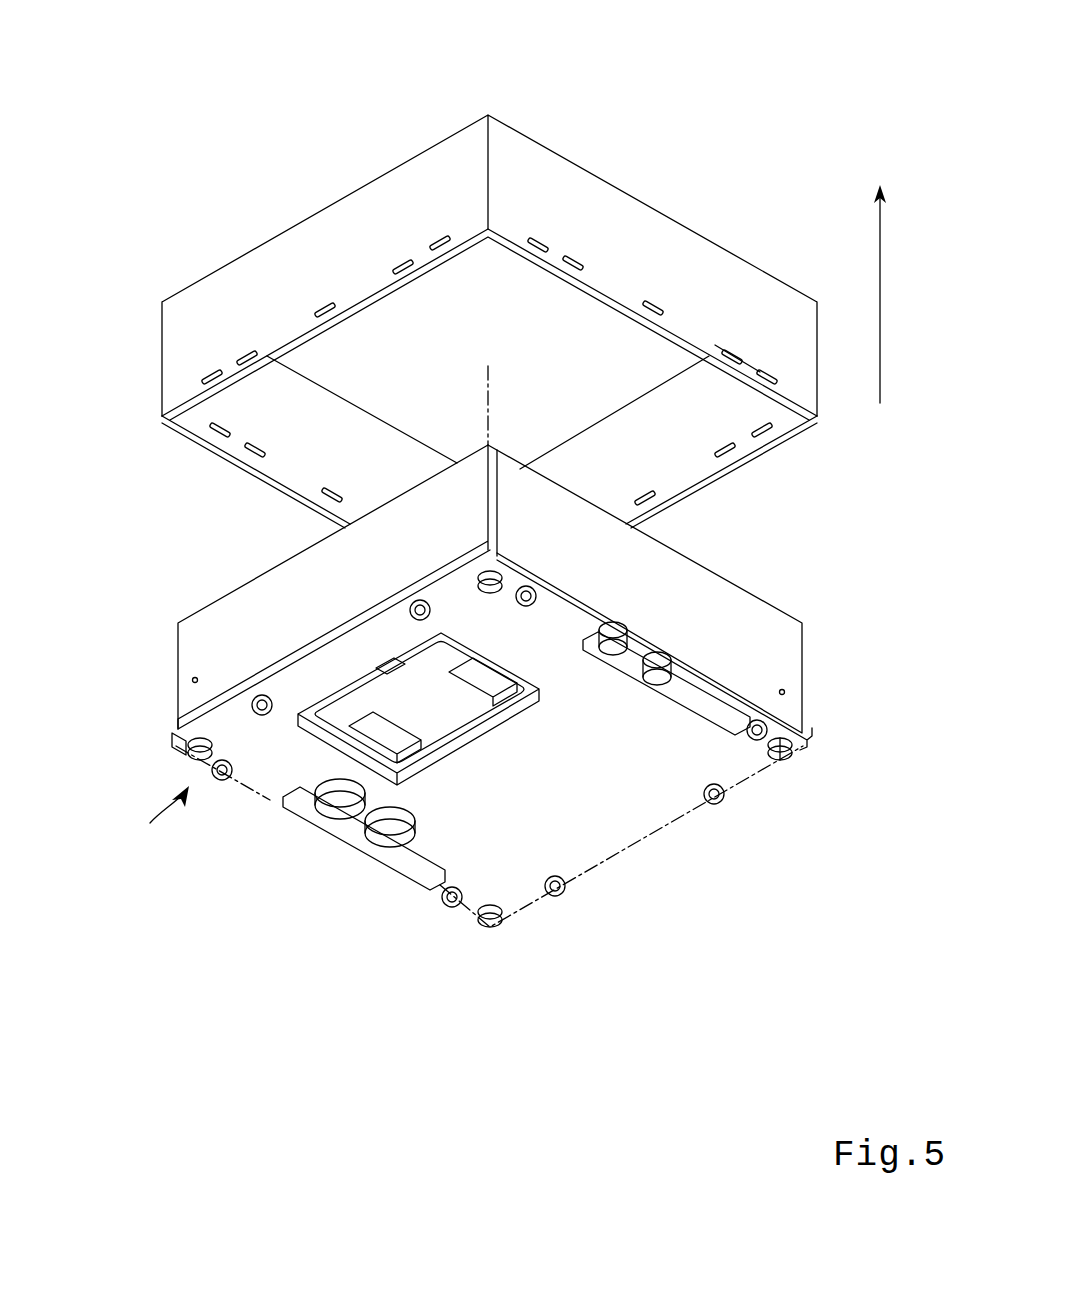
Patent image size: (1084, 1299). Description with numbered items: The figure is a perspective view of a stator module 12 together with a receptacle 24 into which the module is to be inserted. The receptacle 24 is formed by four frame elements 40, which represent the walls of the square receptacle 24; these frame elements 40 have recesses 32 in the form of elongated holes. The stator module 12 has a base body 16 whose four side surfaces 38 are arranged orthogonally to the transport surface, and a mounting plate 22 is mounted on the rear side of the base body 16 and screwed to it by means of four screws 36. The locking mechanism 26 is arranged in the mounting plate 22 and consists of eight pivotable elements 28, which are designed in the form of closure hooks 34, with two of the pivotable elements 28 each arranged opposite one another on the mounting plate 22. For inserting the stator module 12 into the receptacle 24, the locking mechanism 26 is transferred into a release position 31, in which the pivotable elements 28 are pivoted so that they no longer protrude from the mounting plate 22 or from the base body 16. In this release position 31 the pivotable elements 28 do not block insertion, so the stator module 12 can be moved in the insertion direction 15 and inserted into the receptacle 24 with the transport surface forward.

The stator module 12 is at (508, 740).
The insertion direction 15 is at (906, 294).
The base body 16 is at (242, 652).
The mounting plate 22 is at (567, 770).
The receptacle 24 is at (340, 372).
The locking mechanism 26 is at (812, 733).
The pivotable elements 28 is at (770, 752).
The release position 31 is at (150, 848).
The recesses 32 is at (738, 358).
The closure hooks 34 is at (758, 742).
The screws 36 is at (783, 790).
The side surfaces 38 is at (320, 590).
The frame elements 40 is at (367, 234).